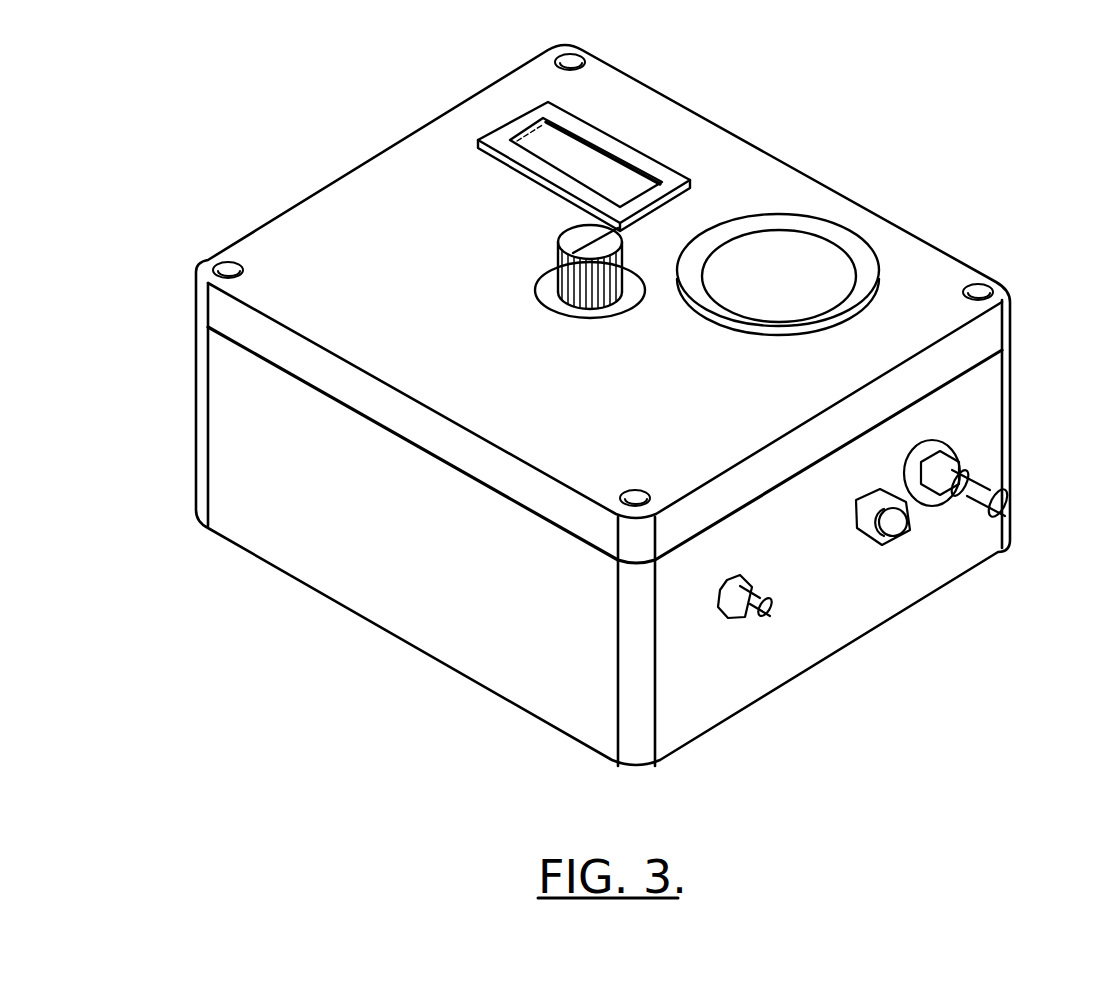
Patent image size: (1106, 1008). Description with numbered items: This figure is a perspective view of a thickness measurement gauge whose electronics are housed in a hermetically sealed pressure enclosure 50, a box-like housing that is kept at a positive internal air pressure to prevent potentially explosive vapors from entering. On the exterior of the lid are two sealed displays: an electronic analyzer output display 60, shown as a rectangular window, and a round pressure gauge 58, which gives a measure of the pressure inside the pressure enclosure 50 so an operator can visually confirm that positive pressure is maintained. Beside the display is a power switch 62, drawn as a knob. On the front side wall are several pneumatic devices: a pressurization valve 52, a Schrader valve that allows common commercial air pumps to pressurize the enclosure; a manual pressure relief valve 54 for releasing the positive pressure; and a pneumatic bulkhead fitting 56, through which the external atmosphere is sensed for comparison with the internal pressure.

The pressure enclosure 50 is at (848, 82).
The pressurization valve 52 is at (965, 456).
The manual pressure relief valve 54 is at (873, 545).
The pneumatic bulkhead fitting 56 is at (731, 617).
The pressure gauge 58 is at (862, 257).
The electronic analyzer output display 60 is at (645, 158).
The power switch 62 is at (576, 302).